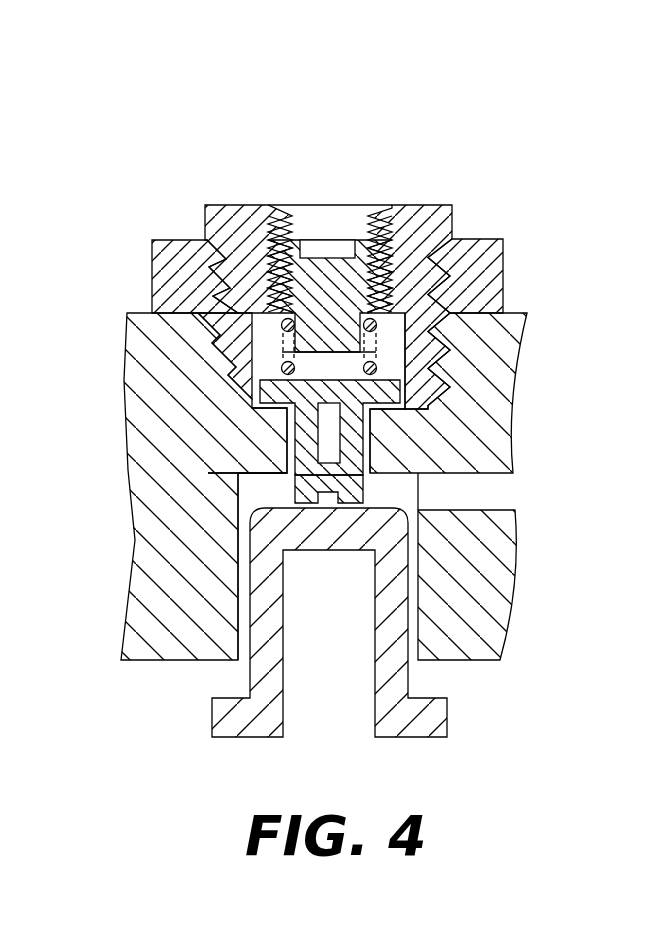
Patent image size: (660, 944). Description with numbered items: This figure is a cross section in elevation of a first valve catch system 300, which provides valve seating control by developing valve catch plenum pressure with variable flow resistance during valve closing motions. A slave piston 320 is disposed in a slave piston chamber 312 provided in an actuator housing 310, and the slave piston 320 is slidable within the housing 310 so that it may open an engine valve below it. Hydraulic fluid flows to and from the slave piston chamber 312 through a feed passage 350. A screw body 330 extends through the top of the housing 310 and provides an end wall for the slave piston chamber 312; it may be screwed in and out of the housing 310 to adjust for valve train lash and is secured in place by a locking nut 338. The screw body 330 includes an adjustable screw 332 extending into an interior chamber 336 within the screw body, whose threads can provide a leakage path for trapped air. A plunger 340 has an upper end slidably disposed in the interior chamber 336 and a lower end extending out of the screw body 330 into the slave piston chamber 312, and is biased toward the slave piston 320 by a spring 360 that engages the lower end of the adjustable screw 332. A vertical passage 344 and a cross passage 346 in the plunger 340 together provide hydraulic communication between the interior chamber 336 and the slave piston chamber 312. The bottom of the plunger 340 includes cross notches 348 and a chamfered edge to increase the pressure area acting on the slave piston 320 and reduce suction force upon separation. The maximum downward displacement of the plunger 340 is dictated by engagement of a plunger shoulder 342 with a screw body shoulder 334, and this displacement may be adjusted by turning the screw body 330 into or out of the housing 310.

The valve catch system 300 is at (448, 112).
The actuator housing 310 is at (218, 566).
The slave piston chamber 312 is at (262, 500).
The slave piston 320 is at (447, 722).
The screw body 330 is at (452, 212).
The adjustable screw 332 is at (322, 267).
The screw body shoulder 334 is at (274, 415).
The interior chamber 336 is at (328, 401).
The locking nut 338 is at (487, 284).
The plunger 340 is at (267, 380).
The plunger shoulder 342 is at (412, 409).
The vertical passage 344 is at (276, 318).
The cross passage 346 is at (418, 513).
The cross notches 348 is at (327, 500).
The feed passage 350 is at (492, 492).
The spring 360 is at (437, 352).